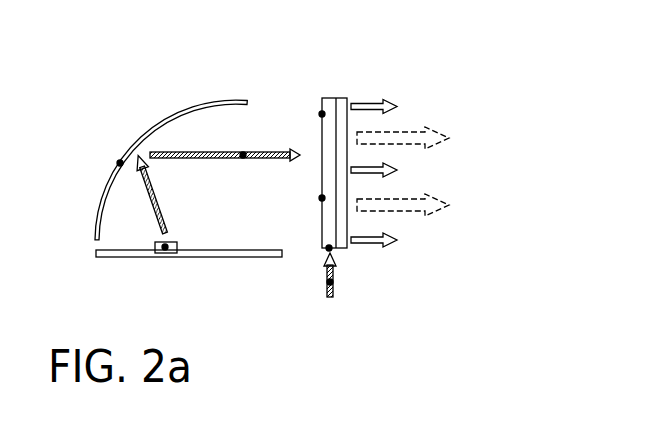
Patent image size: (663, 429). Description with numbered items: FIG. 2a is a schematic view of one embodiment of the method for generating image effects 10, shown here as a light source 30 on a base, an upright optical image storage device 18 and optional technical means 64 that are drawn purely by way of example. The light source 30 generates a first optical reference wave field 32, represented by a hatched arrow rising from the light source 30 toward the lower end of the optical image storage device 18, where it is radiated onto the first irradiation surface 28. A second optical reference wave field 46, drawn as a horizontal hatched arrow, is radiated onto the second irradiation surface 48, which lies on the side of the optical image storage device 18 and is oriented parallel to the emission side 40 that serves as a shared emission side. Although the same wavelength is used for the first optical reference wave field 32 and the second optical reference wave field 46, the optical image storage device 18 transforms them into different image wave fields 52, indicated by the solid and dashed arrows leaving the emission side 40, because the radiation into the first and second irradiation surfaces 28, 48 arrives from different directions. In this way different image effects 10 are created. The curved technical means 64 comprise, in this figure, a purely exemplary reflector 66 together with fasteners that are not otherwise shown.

The image effects 10 is at (428, 77).
The optical image storage device 18 is at (351, 92).
The first irradiation surface 28 is at (329, 248).
The light source 30 is at (165, 250).
The first optical reference wave field 32 is at (330, 282).
The emission side 40 is at (375, 122).
The second optical reference wave field 46 is at (243, 155).
The second irradiation surface 48 is at (322, 114).
The different image wave fields 52 is at (400, 240).
The technical means 64 is at (172, 105).
The reflector 66 is at (120, 163).